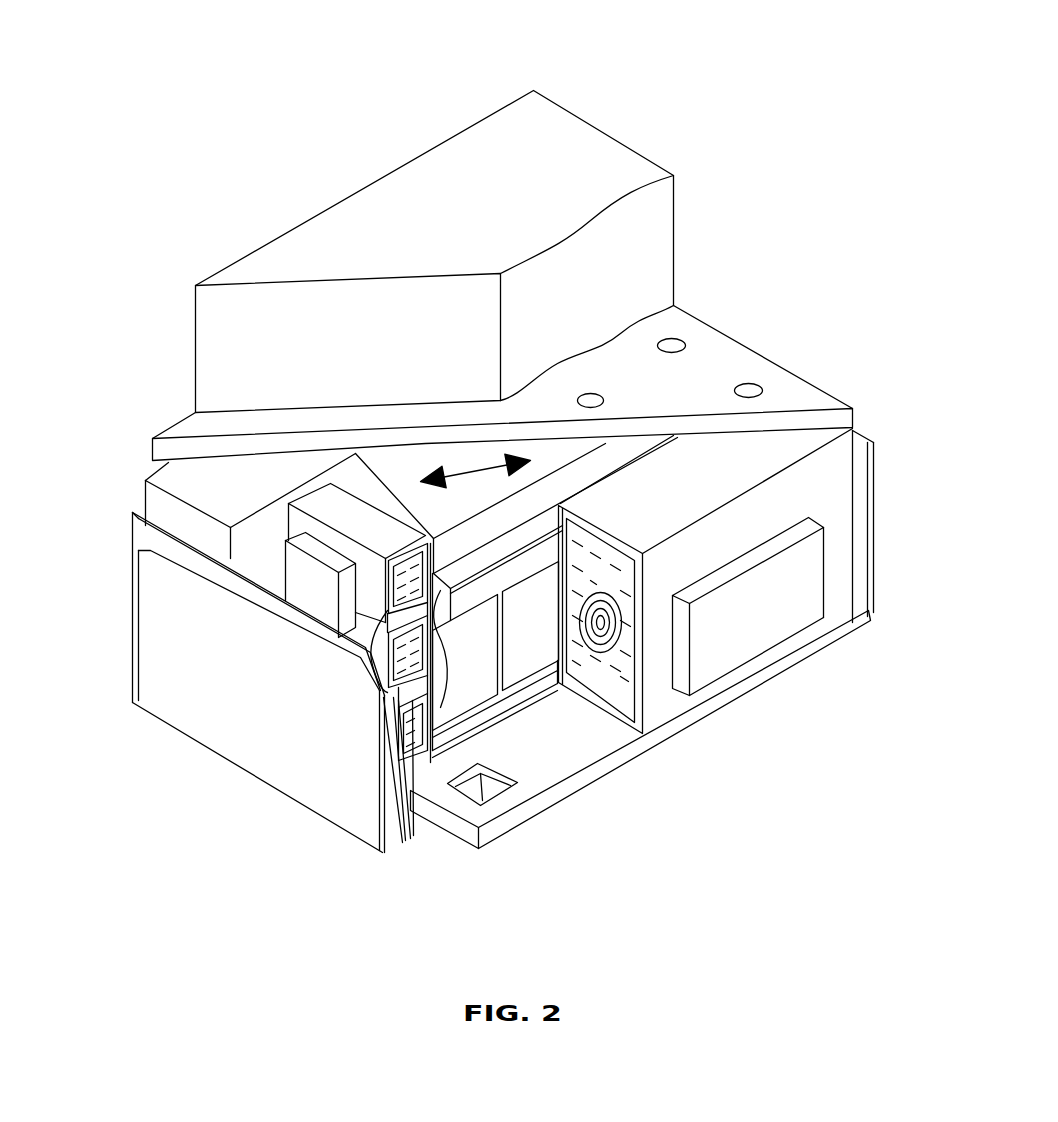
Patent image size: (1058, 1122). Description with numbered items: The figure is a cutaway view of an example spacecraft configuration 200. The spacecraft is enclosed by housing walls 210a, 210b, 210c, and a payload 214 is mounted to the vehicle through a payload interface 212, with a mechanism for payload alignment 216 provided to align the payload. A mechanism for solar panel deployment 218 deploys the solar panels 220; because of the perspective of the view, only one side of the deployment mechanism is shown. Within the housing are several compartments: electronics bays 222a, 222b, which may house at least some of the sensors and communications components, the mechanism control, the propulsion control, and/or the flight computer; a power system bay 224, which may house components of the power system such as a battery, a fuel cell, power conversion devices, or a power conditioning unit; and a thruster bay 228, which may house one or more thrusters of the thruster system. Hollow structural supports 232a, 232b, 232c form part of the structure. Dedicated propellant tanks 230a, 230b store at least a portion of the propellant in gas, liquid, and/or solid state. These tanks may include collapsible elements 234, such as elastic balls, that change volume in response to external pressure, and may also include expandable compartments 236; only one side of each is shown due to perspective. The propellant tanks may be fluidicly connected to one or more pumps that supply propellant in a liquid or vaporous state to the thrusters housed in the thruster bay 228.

The spacecraft configuration 200 is at (345, 60).
The housing wall 210a is at (762, 682).
The housing wall 210b is at (875, 568).
The housing wall 210c is at (132, 520).
The payload interface 212 is at (797, 372).
The payload 214 is at (618, 137).
The mechanism for payload alignment 216 is at (603, 452).
The mechanism for solar panel deployment 218 is at (308, 583).
The solar panel 220 is at (165, 703).
The electronics bay 222a is at (298, 675).
The electronics bay 222b is at (448, 735).
The power system bay 224 is at (537, 677).
The thruster bay 228 is at (487, 708).
The dedicated propellant tank 230a is at (150, 472).
The dedicated propellant tank 230b is at (812, 595).
The hollow structural support 232a is at (400, 618).
The hollow structural support 232b is at (393, 655).
The hollow structural support 232c is at (412, 760).
The collapsible element 234 is at (625, 635).
The expandable compartment 236 is at (827, 553).